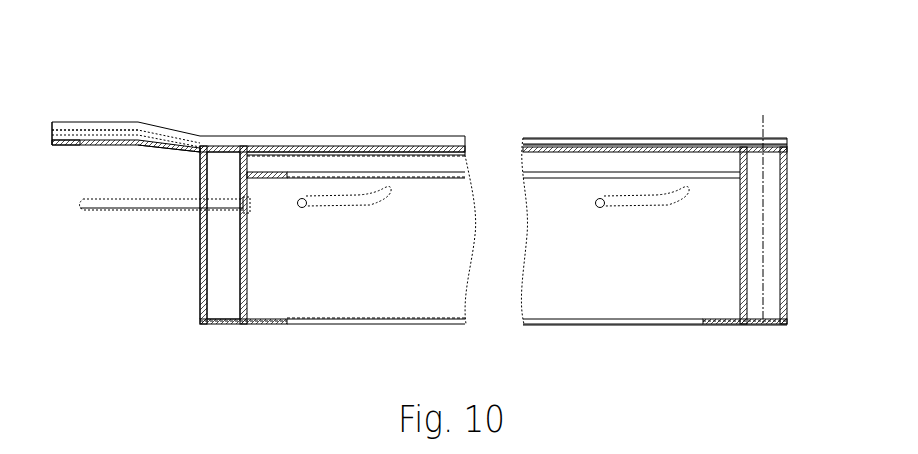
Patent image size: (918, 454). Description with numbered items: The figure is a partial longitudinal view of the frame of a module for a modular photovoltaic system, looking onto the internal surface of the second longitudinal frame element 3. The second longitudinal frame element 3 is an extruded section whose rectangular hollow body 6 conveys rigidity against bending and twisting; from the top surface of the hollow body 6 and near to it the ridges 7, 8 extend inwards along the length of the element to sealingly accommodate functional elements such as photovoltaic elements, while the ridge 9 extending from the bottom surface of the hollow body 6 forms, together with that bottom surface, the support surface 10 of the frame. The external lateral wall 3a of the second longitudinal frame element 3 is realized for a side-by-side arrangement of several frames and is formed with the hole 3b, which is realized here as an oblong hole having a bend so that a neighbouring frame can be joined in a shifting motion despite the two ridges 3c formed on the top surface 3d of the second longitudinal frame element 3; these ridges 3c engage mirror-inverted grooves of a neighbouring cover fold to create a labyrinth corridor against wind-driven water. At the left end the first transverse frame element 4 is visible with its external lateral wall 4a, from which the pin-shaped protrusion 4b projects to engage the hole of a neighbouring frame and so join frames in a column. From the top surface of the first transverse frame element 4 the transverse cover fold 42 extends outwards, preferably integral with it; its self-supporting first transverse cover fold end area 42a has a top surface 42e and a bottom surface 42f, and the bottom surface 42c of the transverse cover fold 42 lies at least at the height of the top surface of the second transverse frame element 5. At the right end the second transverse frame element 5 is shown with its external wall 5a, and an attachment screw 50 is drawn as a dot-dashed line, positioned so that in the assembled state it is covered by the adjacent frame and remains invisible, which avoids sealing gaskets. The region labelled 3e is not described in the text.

The second longitudinal frame element 3 is at (348, 150).
The external lateral wall 3a is at (443, 304).
The hole 3b is at (352, 207).
The ridge 3c is at (565, 138).
The top surface 3d is at (643, 140).
The upper channel 3e is at (430, 156).
The first transverse frame element 4 is at (242, 232).
The external lateral wall 4a is at (203, 263).
The protrusion 4b is at (135, 205).
The second transverse frame element 5 is at (747, 237).
The external wall 5a is at (783, 278).
The hollow body 6 is at (221, 287).
The ridge 7 is at (253, 147).
The ridge 8 is at (268, 178).
The ridge 9 is at (257, 321).
The support surface 10 is at (662, 327).
The transverse cover fold 42 is at (108, 142).
The first transverse cover fold end area 42a is at (60, 128).
The bottom surface 42c is at (157, 153).
The top surface 42e is at (83, 130).
The bottom surface 42f is at (69, 145).
The attachment screw 50 is at (763, 173).